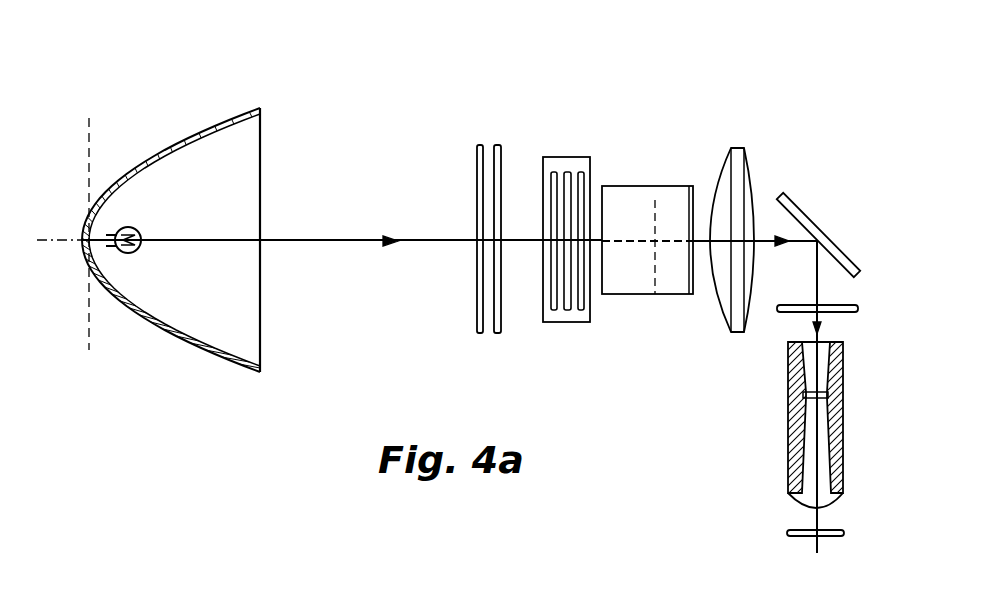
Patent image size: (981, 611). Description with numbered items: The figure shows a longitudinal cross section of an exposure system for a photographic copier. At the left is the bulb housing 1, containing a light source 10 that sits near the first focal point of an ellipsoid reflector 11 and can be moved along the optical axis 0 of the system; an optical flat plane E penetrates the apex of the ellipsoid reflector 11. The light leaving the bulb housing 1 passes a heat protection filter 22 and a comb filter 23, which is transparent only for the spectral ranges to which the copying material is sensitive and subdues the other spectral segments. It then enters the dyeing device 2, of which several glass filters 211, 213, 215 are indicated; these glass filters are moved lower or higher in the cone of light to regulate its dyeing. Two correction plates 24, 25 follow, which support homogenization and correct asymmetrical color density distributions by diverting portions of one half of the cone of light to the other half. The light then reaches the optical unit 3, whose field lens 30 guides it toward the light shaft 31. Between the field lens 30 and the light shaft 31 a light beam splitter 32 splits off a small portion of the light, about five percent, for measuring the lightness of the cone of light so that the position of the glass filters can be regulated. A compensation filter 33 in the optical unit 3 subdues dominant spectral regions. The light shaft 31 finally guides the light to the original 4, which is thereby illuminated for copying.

The bulb housing 1 is at (186, 90).
The light source 10 is at (140, 252).
The ellipsoid reflector 11 is at (153, 332).
The optical flat plane E is at (92, 150).
The optical axis 0 is at (340, 240).
The dyeing device 2 is at (549, 98).
The heat protection filter 22 is at (477, 172).
The comb filter 23 is at (500, 147).
The glass filter 211 is at (553, 291).
The glass filter 213 is at (569, 308).
The glass filter 215 is at (583, 298).
The correction plate 24 is at (675, 285).
The correction plate 25 is at (655, 200).
The optical unit 3 is at (765, 112).
The field lens 30 is at (737, 162).
The light beam splitter 32 is at (792, 202).
The compensation filter 33 is at (783, 313).
The light shaft 31 is at (775, 446).
The original 4 is at (800, 536).